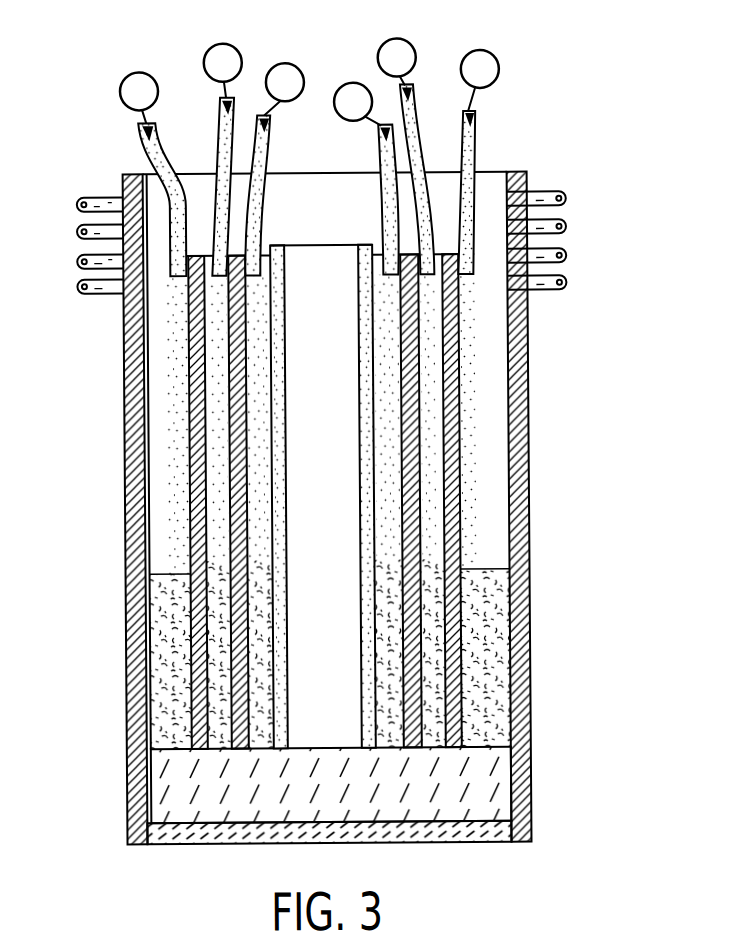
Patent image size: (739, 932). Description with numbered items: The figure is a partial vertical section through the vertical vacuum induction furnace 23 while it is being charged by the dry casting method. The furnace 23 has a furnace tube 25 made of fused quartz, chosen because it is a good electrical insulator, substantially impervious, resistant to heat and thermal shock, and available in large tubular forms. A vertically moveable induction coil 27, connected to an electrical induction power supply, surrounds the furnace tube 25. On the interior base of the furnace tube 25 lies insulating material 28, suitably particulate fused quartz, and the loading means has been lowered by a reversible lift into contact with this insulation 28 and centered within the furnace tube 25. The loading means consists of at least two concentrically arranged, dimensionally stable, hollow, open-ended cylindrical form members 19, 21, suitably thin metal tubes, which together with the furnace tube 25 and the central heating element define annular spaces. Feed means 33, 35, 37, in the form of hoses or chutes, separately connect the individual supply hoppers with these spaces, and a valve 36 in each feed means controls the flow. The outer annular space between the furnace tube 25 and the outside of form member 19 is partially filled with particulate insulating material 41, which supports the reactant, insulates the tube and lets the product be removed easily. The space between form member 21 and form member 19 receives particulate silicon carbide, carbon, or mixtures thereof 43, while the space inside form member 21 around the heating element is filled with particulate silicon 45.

The cylindrical form member 19 is at (453, 468).
The cylindrical form member 21 is at (420, 537).
The vertical vacuum induction furnace 23 is at (363, 507).
The furnace tube 25 is at (530, 400).
The induction coil 27 is at (569, 231).
The insulating material 28 is at (492, 800).
The feed means 33 is at (141, 128).
The feed means 35 is at (218, 142).
The valve 36 is at (168, 43).
The feed means 37 is at (268, 136).
The particulate insulating material 41 is at (180, 657).
The particulate silicon carbide, carbon, or mixtures thereof 43 is at (227, 715).
The particulate silicon 45 is at (377, 680).